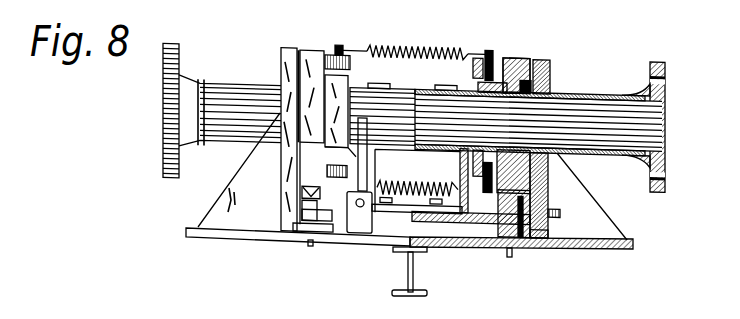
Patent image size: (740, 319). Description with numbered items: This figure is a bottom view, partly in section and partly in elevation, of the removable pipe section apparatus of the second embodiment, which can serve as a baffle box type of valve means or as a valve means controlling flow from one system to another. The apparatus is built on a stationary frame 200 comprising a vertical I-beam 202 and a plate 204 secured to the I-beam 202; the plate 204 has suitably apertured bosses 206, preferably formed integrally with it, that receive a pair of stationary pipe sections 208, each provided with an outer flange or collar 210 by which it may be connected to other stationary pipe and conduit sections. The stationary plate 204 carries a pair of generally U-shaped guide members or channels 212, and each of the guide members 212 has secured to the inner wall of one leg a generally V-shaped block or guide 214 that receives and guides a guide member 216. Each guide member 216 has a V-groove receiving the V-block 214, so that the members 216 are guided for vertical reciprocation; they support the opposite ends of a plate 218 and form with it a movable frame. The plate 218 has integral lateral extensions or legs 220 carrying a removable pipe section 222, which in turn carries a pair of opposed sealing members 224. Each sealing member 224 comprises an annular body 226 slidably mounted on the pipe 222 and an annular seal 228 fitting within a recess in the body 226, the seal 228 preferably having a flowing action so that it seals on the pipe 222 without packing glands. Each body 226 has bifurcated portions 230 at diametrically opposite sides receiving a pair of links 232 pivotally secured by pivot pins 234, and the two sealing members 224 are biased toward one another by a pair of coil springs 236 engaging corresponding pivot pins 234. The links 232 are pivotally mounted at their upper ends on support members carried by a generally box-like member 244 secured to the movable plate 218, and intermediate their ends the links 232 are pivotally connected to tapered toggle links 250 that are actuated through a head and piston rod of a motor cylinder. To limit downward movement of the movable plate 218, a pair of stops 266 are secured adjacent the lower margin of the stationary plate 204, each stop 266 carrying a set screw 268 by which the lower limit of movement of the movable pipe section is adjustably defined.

The stationary frame 200 is at (231, 237).
The vertical I-beam 202 is at (414, 279).
The plate 204 is at (607, 250).
The bosses 206 is at (297, 49).
The stationary pipe sections 208 is at (262, 88).
The outer flange or collar 210 is at (162, 166).
The guide members or channels 212 is at (300, 233).
The V-shaped block or guide 214 is at (315, 197).
The guide member 216 is at (301, 204).
The plate 218 is at (426, 216).
The lateral or transverse extensions or legs 220 is at (368, 158).
The removable pipe section 222 is at (419, 84).
The sealing members 224 is at (312, 50).
The annular body 226 is at (513, 58).
The annular seal 228 is at (553, 92).
The bifurcated portions 230 is at (330, 164).
The links 232 is at (350, 63).
The pivot pins 234 is at (338, 46).
The coil springs 236 is at (392, 48).
The box-like member 244 is at (387, 213).
The toggle links 250 is at (473, 90).
The stops 266 is at (366, 223).
The set screw 268 is at (359, 209).